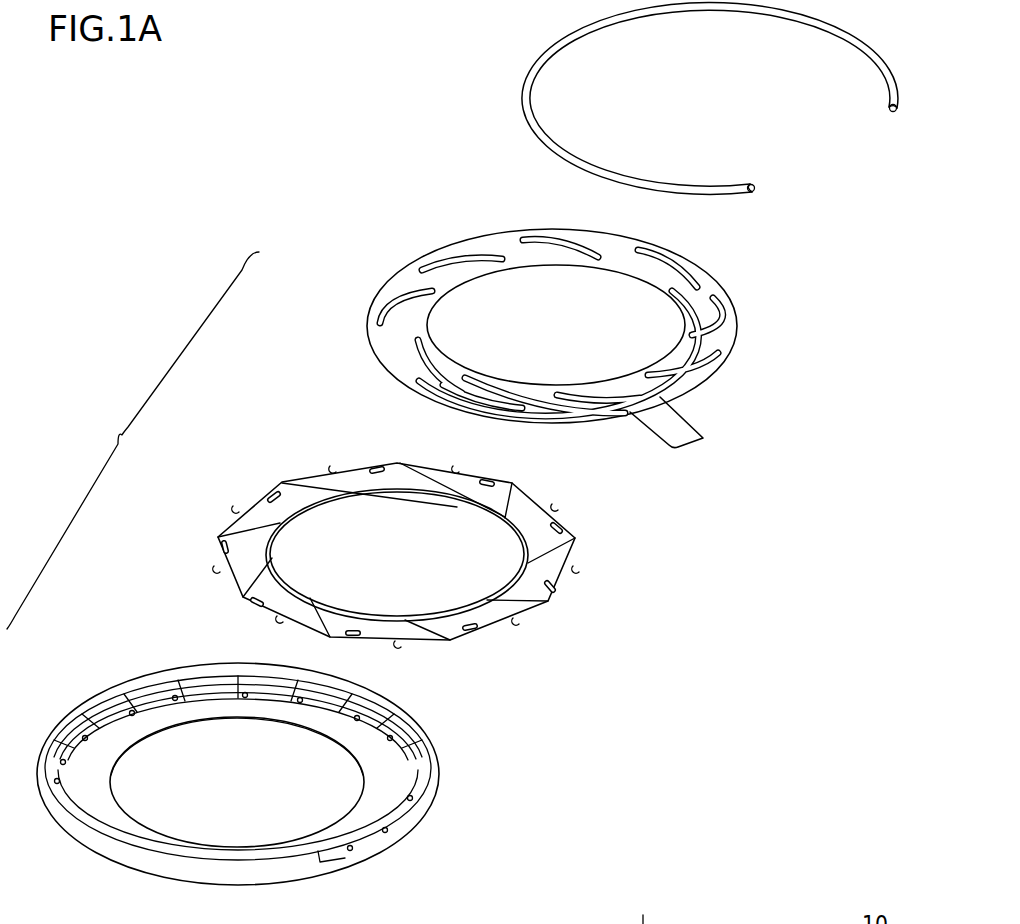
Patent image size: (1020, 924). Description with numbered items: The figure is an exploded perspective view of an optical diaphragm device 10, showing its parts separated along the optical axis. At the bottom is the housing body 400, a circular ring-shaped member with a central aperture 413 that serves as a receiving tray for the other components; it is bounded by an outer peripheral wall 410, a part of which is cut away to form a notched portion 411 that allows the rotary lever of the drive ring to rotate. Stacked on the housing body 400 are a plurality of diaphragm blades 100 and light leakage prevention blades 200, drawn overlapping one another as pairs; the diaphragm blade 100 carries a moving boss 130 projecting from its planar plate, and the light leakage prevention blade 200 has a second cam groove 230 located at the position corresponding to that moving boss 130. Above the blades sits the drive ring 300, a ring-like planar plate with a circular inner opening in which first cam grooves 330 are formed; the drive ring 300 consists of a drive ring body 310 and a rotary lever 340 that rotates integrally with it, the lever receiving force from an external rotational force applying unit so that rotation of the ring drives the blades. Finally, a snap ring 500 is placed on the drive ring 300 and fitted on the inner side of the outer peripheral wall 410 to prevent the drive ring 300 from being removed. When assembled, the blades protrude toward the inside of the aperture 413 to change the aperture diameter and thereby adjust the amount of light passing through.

The optical diaphragm device 10 is at (133, 440).
The diaphragm blade 100 is at (334, 537).
The light leakage prevention blade 200 is at (217, 518).
The moving boss 130 is at (280, 488).
The second cam groove 230 is at (392, 538).
The drive ring 300 is at (544, 320).
The drive ring body 310 is at (731, 333).
The first cam groove 330 is at (464, 251).
The rotary lever 340 is at (681, 428).
The housing body 400 is at (293, 759).
The outer peripheral wall 410 is at (416, 731).
The notched portion 411 is at (429, 831).
The aperture 413 is at (187, 822).
The snap ring 500 is at (521, 57).